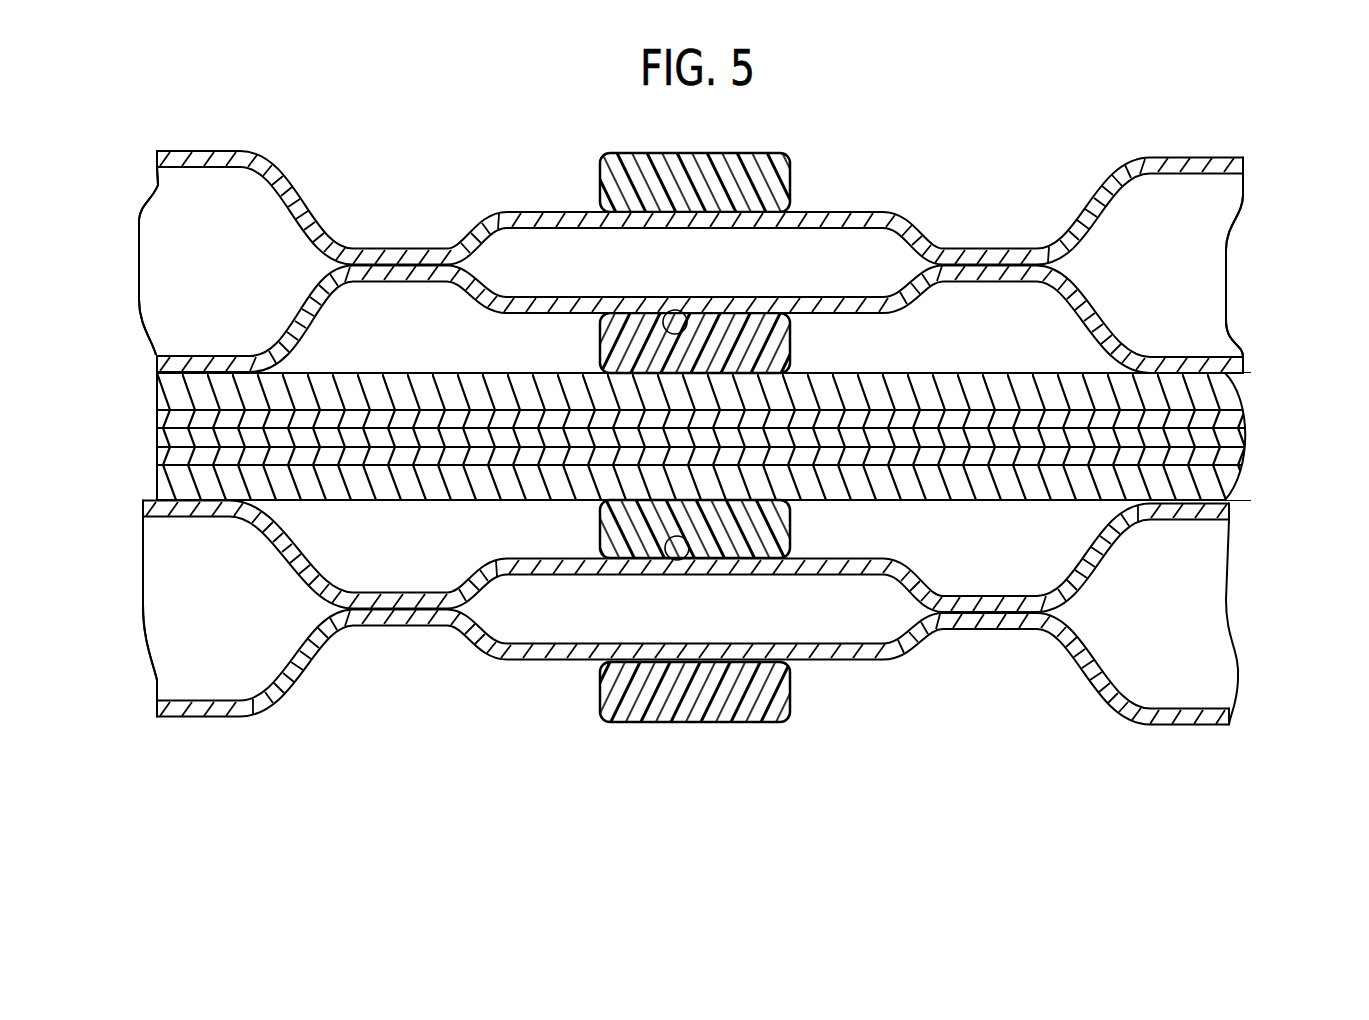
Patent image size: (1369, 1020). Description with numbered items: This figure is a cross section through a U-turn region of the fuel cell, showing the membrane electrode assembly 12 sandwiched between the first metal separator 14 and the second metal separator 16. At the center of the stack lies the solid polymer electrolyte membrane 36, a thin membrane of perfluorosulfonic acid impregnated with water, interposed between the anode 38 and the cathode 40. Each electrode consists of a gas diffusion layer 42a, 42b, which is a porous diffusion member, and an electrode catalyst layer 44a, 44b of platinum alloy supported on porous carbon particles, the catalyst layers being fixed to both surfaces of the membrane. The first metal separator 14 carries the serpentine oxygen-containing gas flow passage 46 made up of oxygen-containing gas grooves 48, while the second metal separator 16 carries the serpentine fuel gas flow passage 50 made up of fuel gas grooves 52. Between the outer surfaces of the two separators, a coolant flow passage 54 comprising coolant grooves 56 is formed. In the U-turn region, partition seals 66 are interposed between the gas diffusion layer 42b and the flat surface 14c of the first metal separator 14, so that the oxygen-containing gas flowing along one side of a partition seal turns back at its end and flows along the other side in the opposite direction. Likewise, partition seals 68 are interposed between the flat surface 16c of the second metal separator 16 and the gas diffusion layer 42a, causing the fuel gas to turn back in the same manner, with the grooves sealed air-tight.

The membrane electrode assembly 12 is at (704, 432).
The first metal separator 14 is at (1218, 528).
The flat surface of the first metal separator 14c is at (687, 562).
The second metal separator 16 is at (1219, 355).
The flat surface of the second metal separator 16c is at (685, 300).
The solid polymer electrolyte membrane 36 is at (1228, 441).
The anode 38 is at (645, 397).
The cathode 40 is at (763, 479).
The gas diffusion layer of the anode 42a is at (165, 385).
The gas diffusion layer of the cathode 42b is at (1218, 484).
The electrode catalyst layer of the anode 44a is at (165, 415).
The electrode catalyst layer of the cathode 44b is at (1228, 457).
The serpentine oxygen-containing gas flow passage 46 is at (380, 579).
The oxygen-containing gas grooves 48 is at (700, 542).
The serpentine fuel gas flow passage 50 is at (967, 289).
The fuel gas grooves 52 is at (693, 329).
The coolant flow passage 54 is at (276, 231).
The coolant grooves 56 is at (682, 434).
The partition seals 66 is at (618, 527).
The partition seals 68 is at (618, 339).